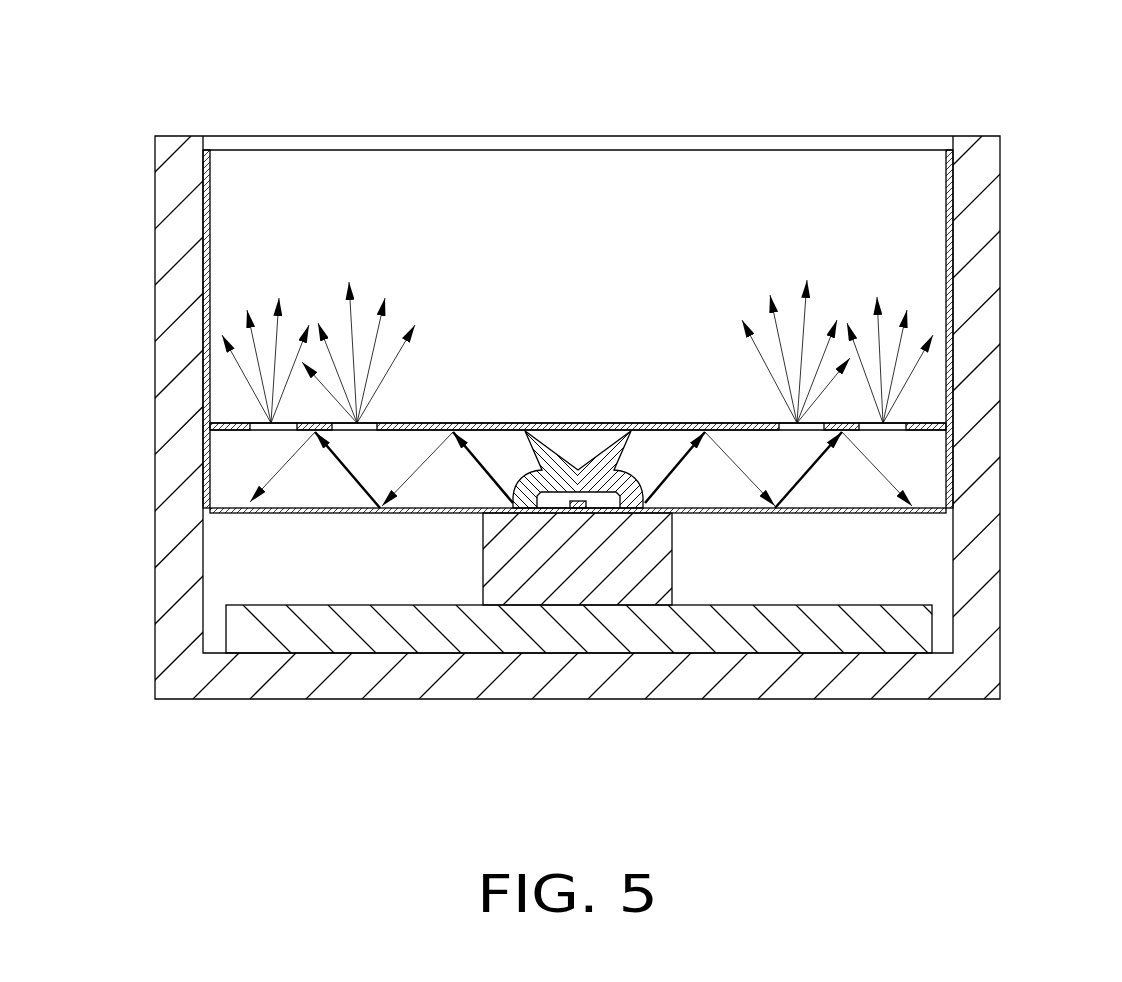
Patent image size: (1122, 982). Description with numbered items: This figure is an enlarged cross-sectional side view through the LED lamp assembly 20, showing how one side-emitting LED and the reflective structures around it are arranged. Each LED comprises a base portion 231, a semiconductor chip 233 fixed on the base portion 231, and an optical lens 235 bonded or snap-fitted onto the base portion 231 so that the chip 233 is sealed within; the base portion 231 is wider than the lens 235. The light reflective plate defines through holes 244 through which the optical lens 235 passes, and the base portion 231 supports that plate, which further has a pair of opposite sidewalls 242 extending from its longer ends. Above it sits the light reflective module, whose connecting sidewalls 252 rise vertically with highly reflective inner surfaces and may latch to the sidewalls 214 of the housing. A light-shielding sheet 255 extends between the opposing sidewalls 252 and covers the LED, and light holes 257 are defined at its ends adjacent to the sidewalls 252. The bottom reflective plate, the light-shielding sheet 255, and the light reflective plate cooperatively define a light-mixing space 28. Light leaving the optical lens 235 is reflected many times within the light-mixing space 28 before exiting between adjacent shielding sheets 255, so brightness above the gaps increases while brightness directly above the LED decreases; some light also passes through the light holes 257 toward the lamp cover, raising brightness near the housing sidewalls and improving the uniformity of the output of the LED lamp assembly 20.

The LED lamp assembly 20 is at (595, 48).
The sidewalls of the housing 214 is at (973, 277).
The connecting sidewalls 252 is at (945, 217).
The light-shielding sheets 255 is at (496, 423).
The light holes 257 is at (897, 421).
The sidewalls of the light reflective plate 242 is at (953, 470).
The light-mixing space 28 is at (243, 468).
The through holes 244 is at (645, 505).
The optical lens 235 is at (579, 467).
The semiconductor chip 233 is at (577, 511).
The base portion 231 is at (650, 590).